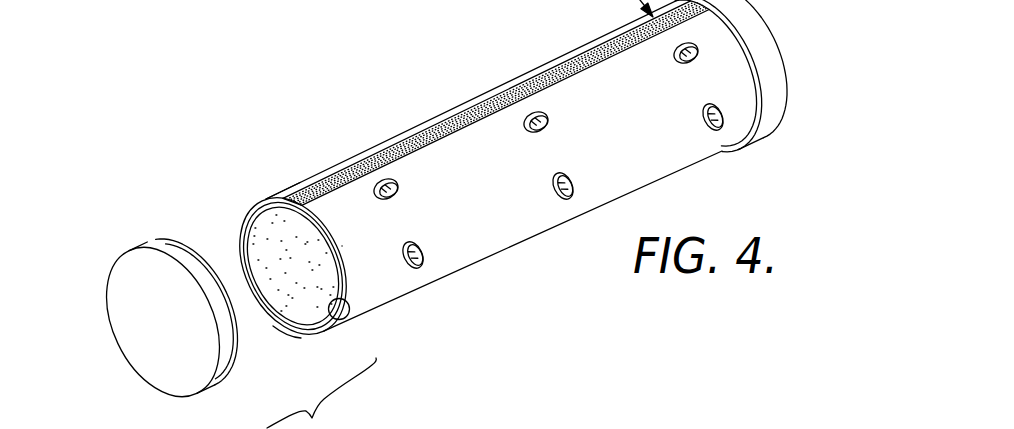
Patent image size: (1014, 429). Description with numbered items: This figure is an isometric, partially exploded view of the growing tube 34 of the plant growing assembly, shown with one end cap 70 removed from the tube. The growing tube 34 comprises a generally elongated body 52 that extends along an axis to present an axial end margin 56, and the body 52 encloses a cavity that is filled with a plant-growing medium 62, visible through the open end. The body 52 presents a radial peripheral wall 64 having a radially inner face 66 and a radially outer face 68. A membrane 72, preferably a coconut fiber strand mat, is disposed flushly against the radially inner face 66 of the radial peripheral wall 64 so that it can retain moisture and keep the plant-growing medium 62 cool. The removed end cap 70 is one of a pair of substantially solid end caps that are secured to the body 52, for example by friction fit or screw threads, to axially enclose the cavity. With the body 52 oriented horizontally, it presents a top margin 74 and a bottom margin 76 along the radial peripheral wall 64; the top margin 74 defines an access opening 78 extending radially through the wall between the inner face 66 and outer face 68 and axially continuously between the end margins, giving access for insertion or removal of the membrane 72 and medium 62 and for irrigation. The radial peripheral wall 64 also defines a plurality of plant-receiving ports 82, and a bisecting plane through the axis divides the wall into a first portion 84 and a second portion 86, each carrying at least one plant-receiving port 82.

The growing tube 34 is at (313, 128).
The elongated body 52 is at (507, 237).
The axial end margin 56 is at (277, 188).
The plant-growing medium 62 is at (262, 236).
The radial peripheral wall 64 is at (352, 279).
The radially inner face 66 is at (346, 306).
The radially outer face 68 is at (342, 246).
The end cap 70 is at (128, 342).
The membrane 72 is at (263, 320).
The top margin 74 is at (590, 72).
The bottom margin 76 is at (301, 346).
The access opening 78 is at (551, 71).
The plant-receiving port 82 is at (421, 244).
The first portion 84 is at (328, 218).
The second portion 86 is at (412, 131).